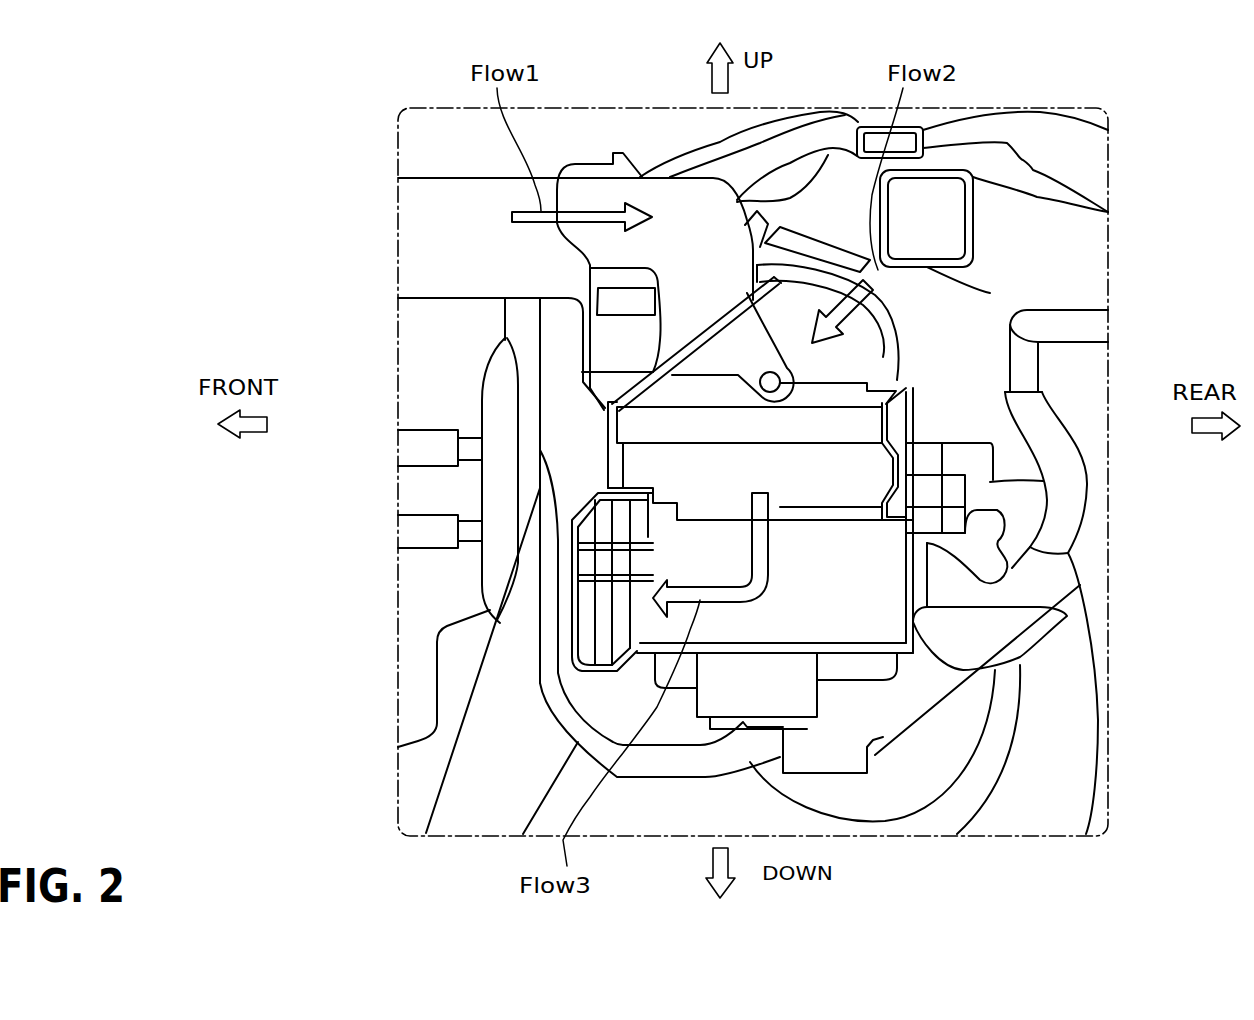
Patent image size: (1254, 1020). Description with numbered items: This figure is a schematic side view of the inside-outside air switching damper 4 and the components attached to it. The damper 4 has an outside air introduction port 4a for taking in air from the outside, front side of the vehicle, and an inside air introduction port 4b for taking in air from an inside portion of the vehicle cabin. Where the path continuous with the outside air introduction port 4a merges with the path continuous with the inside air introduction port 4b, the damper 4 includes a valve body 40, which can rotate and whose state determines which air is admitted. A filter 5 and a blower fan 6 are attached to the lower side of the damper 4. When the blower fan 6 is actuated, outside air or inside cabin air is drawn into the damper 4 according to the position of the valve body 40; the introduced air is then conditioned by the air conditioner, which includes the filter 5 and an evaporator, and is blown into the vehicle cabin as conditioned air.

The inside-outside air switching damper 4 is at (1122, 328).
The outside air introduction port 4a is at (436, 219).
The inside air introduction port 4b is at (882, 326).
The valve body 40 is at (665, 335).
The filter 5 is at (640, 423).
The blower fan 6 is at (793, 697).